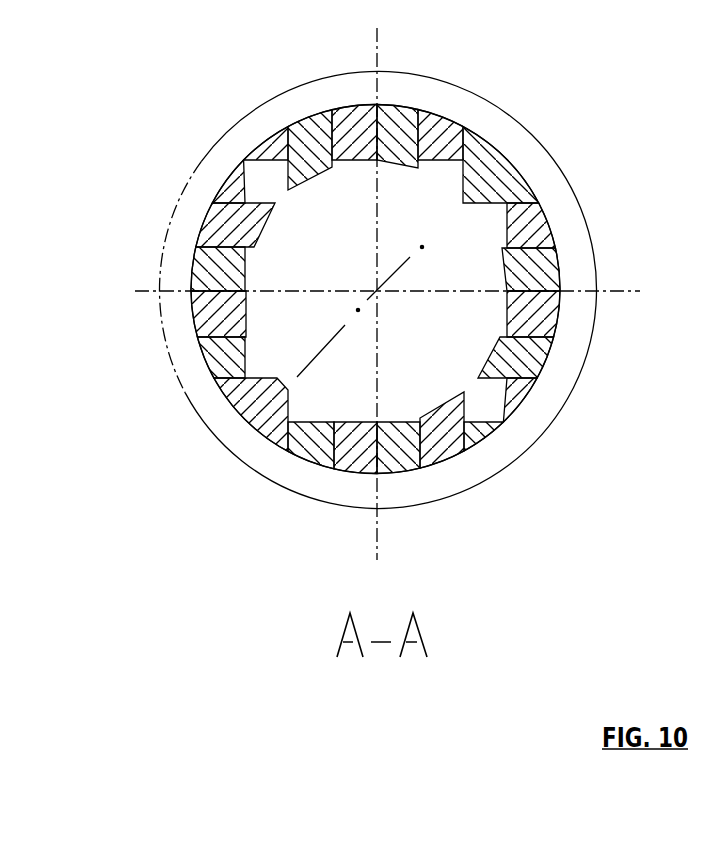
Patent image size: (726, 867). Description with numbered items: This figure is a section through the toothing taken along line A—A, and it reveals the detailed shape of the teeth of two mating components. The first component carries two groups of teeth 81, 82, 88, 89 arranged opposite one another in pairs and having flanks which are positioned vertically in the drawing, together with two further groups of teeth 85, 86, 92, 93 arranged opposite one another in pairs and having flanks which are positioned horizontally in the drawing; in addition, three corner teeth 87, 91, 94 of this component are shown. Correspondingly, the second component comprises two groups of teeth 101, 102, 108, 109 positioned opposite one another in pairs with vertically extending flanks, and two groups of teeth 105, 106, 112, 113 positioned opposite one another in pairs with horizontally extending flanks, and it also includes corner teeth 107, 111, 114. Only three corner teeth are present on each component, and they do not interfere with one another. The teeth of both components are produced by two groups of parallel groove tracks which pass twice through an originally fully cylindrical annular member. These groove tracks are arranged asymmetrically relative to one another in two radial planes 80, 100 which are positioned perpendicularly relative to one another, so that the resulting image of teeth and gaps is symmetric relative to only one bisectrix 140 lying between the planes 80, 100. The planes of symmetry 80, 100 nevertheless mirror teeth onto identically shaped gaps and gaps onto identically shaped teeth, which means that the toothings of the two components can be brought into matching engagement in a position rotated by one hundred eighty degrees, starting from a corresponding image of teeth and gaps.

The radial plane 80 is at (463, 197).
The tooth 81 is at (346, 125).
The tooth 82 is at (440, 125).
The tooth 85 is at (558, 229).
The tooth 86 is at (558, 322).
The corner tooth 87 is at (522, 398).
The tooth 88 is at (440, 455).
The tooth 89 is at (352, 470).
The corner tooth 91 is at (258, 410).
The tooth 92 is at (193, 315).
The tooth 93 is at (200, 225).
The corner tooth 94 is at (262, 150).
The radial plane 100 is at (300, 288).
The tooth 101 is at (398, 460).
The tooth 102 is at (309, 457).
The tooth 105 is at (207, 365).
The tooth 106 is at (192, 272).
The corner tooth 107 is at (223, 181).
The tooth 108 is at (303, 123).
The tooth 109 is at (400, 123).
The corner tooth 111 is at (503, 160).
The tooth 112 is at (558, 275).
The tooth 113 is at (555, 362).
The corner tooth 114 is at (492, 442).
The bisectrix 140 is at (330, 345).